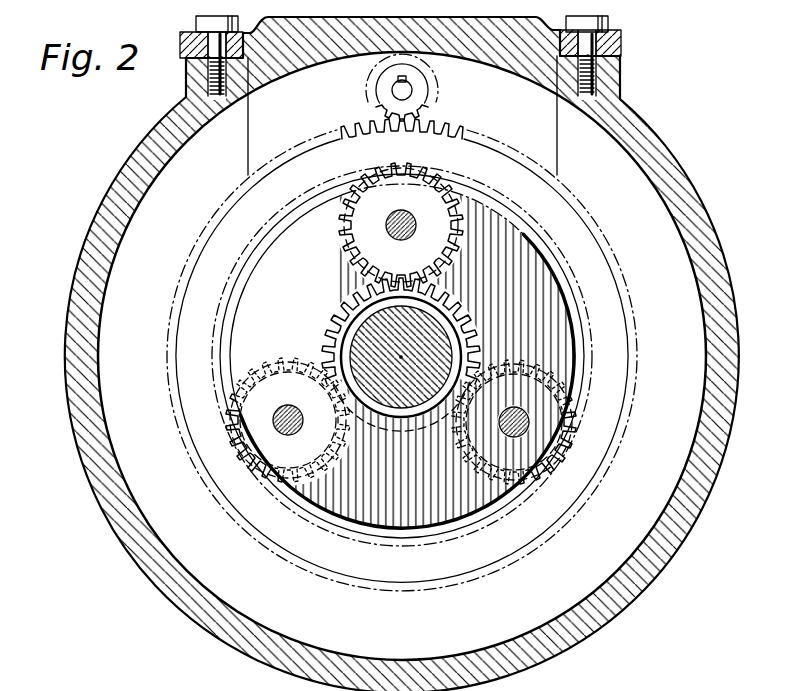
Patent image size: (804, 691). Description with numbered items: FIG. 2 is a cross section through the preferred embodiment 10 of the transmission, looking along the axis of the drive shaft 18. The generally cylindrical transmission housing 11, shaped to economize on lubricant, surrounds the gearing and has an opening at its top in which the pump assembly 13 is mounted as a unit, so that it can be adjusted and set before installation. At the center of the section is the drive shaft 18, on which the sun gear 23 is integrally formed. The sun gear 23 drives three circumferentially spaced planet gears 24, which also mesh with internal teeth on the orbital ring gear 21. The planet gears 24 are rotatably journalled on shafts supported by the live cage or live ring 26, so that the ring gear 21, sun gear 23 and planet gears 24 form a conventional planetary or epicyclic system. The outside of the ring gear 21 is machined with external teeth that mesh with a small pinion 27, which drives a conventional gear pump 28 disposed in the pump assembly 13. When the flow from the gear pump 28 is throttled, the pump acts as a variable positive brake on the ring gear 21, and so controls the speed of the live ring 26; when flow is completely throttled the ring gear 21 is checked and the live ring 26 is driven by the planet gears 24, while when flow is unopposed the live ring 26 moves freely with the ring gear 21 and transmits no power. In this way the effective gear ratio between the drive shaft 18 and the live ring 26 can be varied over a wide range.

The preferred embodiment 10 is at (684, 564).
The transmission housing 11 is at (717, 452).
The pump assembly 13 is at (535, 131).
The drive shaft 18 is at (427, 335).
The ring gear 21 is at (419, 157).
The sun gear 23 is at (444, 303).
The planet gears 24 is at (283, 372).
The live ring 26 is at (367, 517).
The pinion 27 is at (427, 93).
The gear pump 28 is at (771, 687).